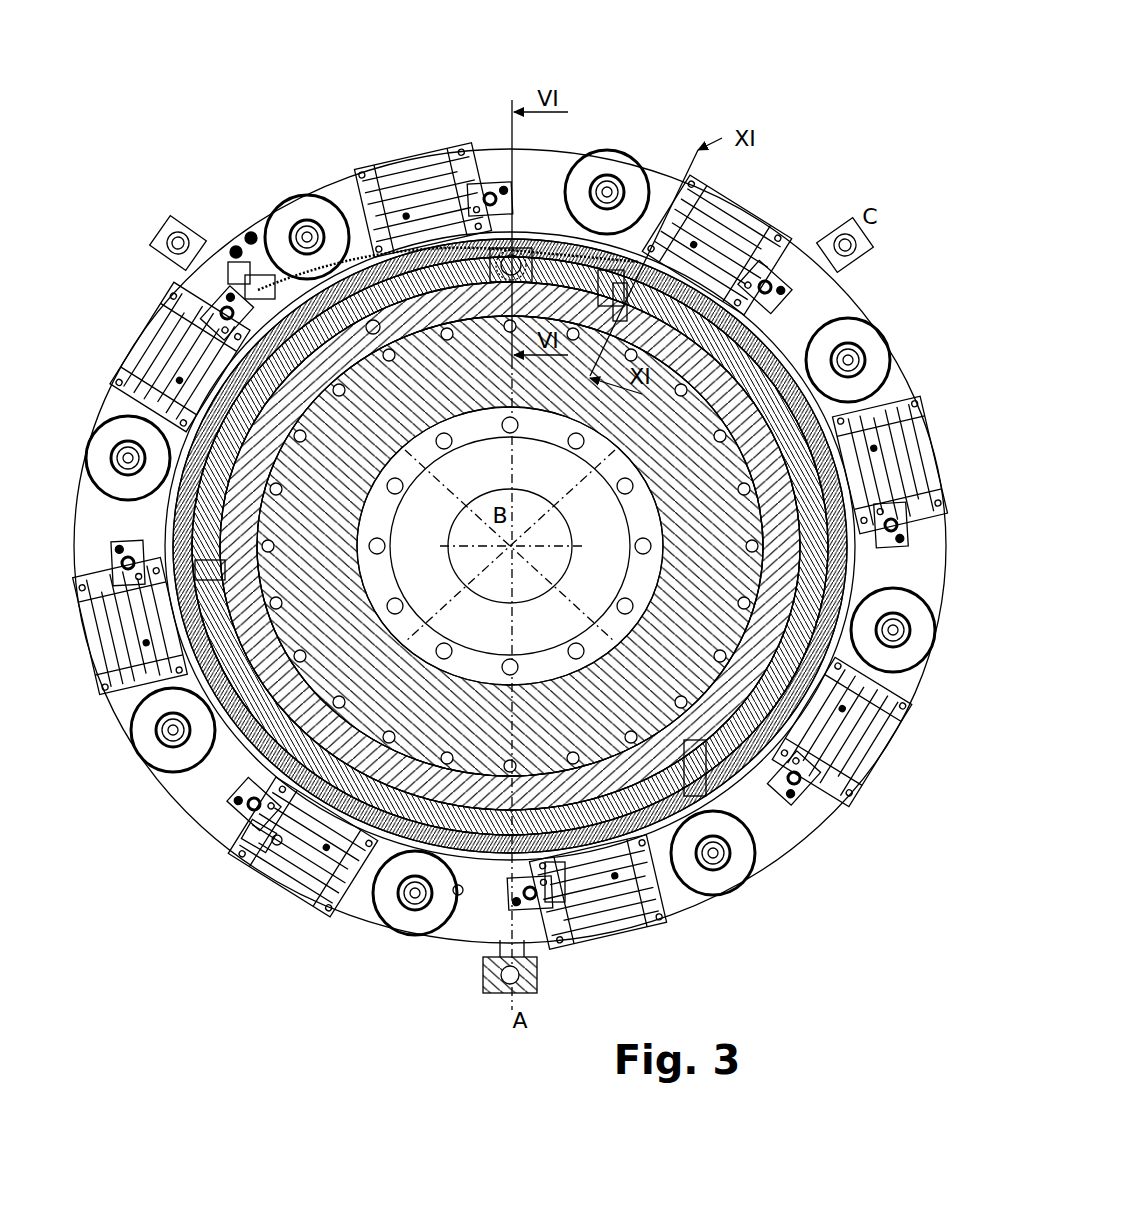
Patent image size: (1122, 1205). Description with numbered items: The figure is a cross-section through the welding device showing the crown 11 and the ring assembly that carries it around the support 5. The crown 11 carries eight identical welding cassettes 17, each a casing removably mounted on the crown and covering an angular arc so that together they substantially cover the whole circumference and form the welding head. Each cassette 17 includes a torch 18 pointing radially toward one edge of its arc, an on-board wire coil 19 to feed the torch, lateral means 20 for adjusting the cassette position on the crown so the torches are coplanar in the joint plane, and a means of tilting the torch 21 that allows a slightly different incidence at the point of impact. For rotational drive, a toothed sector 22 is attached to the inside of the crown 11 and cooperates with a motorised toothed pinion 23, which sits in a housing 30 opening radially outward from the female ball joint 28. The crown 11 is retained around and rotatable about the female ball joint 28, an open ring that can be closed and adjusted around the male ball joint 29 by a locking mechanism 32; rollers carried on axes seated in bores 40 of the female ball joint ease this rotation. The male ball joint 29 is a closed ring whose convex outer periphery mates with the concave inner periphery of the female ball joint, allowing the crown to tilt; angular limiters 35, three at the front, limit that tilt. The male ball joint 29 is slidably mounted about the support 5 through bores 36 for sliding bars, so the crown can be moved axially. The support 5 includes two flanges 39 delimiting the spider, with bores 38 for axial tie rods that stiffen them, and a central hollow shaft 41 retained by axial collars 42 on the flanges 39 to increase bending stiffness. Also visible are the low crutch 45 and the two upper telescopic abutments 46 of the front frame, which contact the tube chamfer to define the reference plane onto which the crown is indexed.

The support 5 is at (643, 515).
The crown 11 is at (645, 830).
The welding cassette 17 is at (373, 940).
The torch 18 is at (257, 837).
The on-board wire coil 19 is at (390, 907).
The lateral means for adjusting the position of the cassette 20 is at (277, 840).
The means of tilting the torch 21 is at (240, 813).
The toothed sector 22 is at (445, 240).
The motorised toothed pinion 23 is at (462, 262).
The female ball joint 28 is at (790, 668).
The male ball joint 29 is at (775, 752).
The housing 30 is at (612, 290).
The locking mechanism 32 is at (555, 870).
The angular limiter 35 is at (620, 300).
The bore for sliding bar 36 is at (262, 285).
The bore 38 is at (245, 280).
The flange 39 is at (373, 327).
The bore 40 is at (228, 362).
The central hollow shaft 41 is at (600, 583).
The axial collar 42 is at (770, 425).
The low crutch 45 is at (500, 990).
The upper telescopic abutment 46 is at (172, 228).